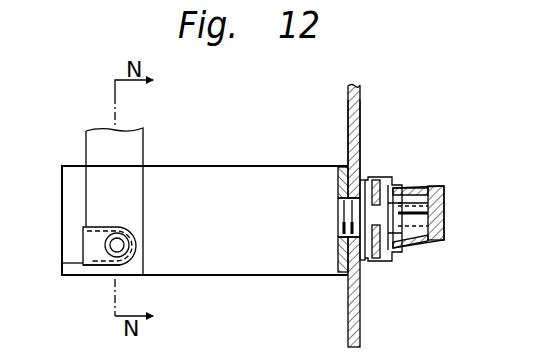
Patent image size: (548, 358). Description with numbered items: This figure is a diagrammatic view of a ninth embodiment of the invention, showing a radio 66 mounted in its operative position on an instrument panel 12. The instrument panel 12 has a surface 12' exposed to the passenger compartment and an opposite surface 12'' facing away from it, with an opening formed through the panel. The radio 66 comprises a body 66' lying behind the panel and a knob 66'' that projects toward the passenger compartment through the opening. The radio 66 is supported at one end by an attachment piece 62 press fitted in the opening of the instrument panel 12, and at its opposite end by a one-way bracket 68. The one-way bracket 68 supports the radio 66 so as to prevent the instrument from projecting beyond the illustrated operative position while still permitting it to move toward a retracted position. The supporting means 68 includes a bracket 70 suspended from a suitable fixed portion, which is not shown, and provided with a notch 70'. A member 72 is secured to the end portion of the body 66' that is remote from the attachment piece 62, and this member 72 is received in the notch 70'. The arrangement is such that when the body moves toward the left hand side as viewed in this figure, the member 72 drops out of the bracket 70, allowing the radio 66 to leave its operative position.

The instrument panel 12 is at (371, 195).
The surface 12' is at (383, 135).
The opposite surface 12'' is at (325, 133).
The attachment piece 62 is at (363, 263).
The radio 66 is at (205, 220).
The body 66' is at (205, 298).
The knob 66'' is at (440, 230).
The one-way bracket 68 is at (78, 221).
The bracket 70 is at (140, 201).
The notch 70' is at (97, 293).
The member 72 is at (62, 264).